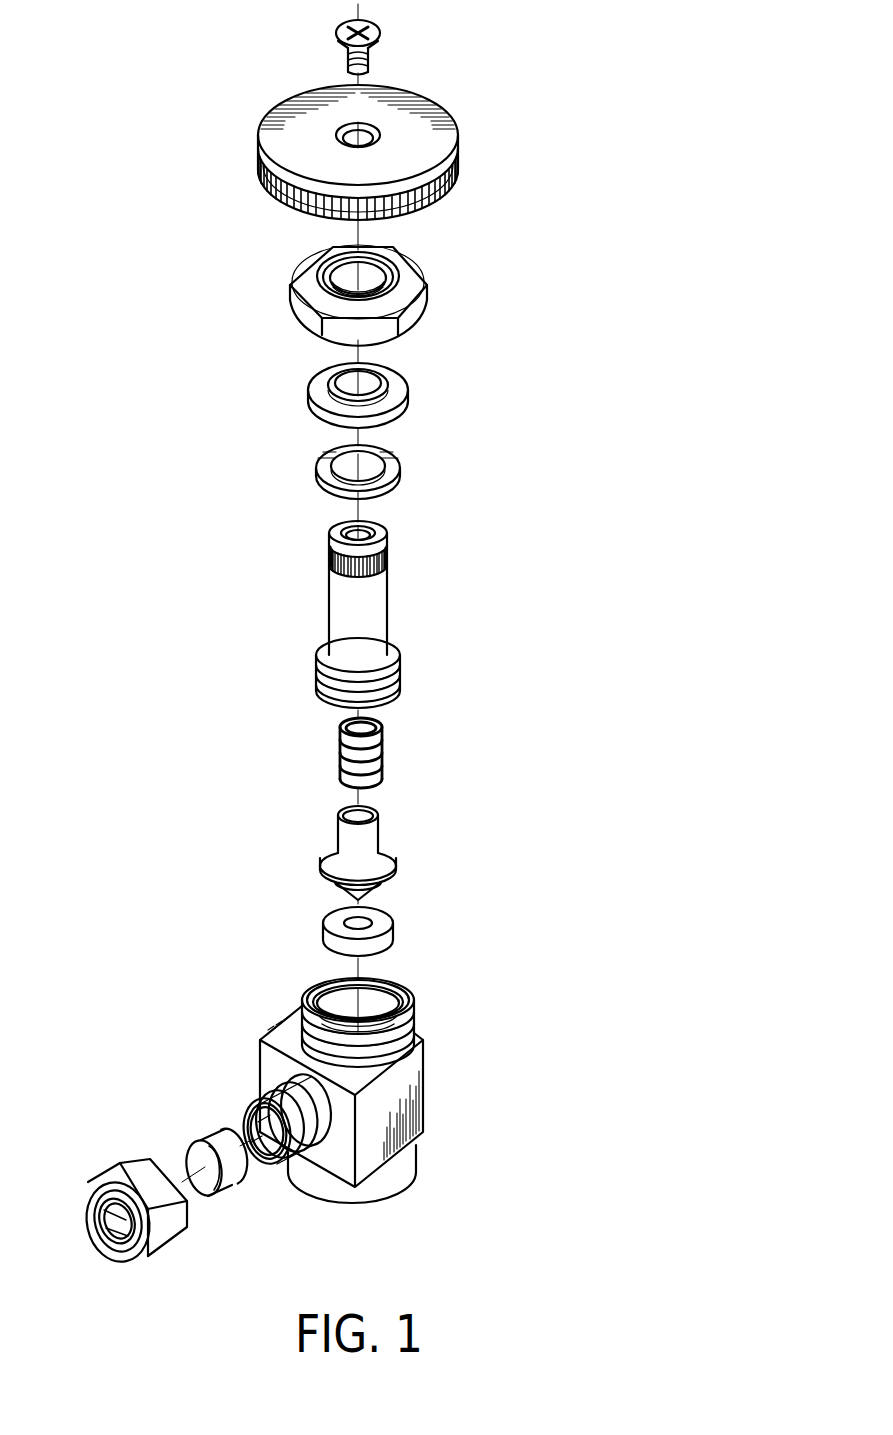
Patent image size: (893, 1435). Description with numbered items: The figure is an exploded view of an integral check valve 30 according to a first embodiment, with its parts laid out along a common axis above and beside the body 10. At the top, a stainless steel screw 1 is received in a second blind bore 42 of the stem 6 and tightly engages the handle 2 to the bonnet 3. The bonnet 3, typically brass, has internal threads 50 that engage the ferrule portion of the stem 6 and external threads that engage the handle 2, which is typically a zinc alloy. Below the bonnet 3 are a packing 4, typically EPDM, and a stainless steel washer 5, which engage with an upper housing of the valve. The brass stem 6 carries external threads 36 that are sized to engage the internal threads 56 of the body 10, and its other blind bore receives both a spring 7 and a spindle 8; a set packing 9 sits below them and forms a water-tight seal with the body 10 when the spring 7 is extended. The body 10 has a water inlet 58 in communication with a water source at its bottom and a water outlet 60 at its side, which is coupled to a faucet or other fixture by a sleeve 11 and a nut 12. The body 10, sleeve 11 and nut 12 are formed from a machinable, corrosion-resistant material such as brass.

The screw 1 is at (373, 31).
The handle 2 is at (435, 157).
The bonnet 3 is at (372, 271).
The packing 4 is at (397, 388).
The washer 5 is at (395, 468).
The stem 6 is at (364, 577).
The spring 7 is at (383, 752).
The spindle 8 is at (393, 855).
The set packing 9 is at (383, 917).
The body 10 is at (384, 1110).
The sleeve 11 is at (205, 1138).
The nut 12 is at (142, 1184).
The integral check valve 30 is at (243, 293).
The external threads 36 is at (317, 660).
The second blind bore 42 is at (348, 536).
The internal threads 50 is at (347, 272).
The internal threads 56 is at (368, 1013).
The water inlet 58 is at (403, 1190).
The water outlet 60 is at (275, 1147).